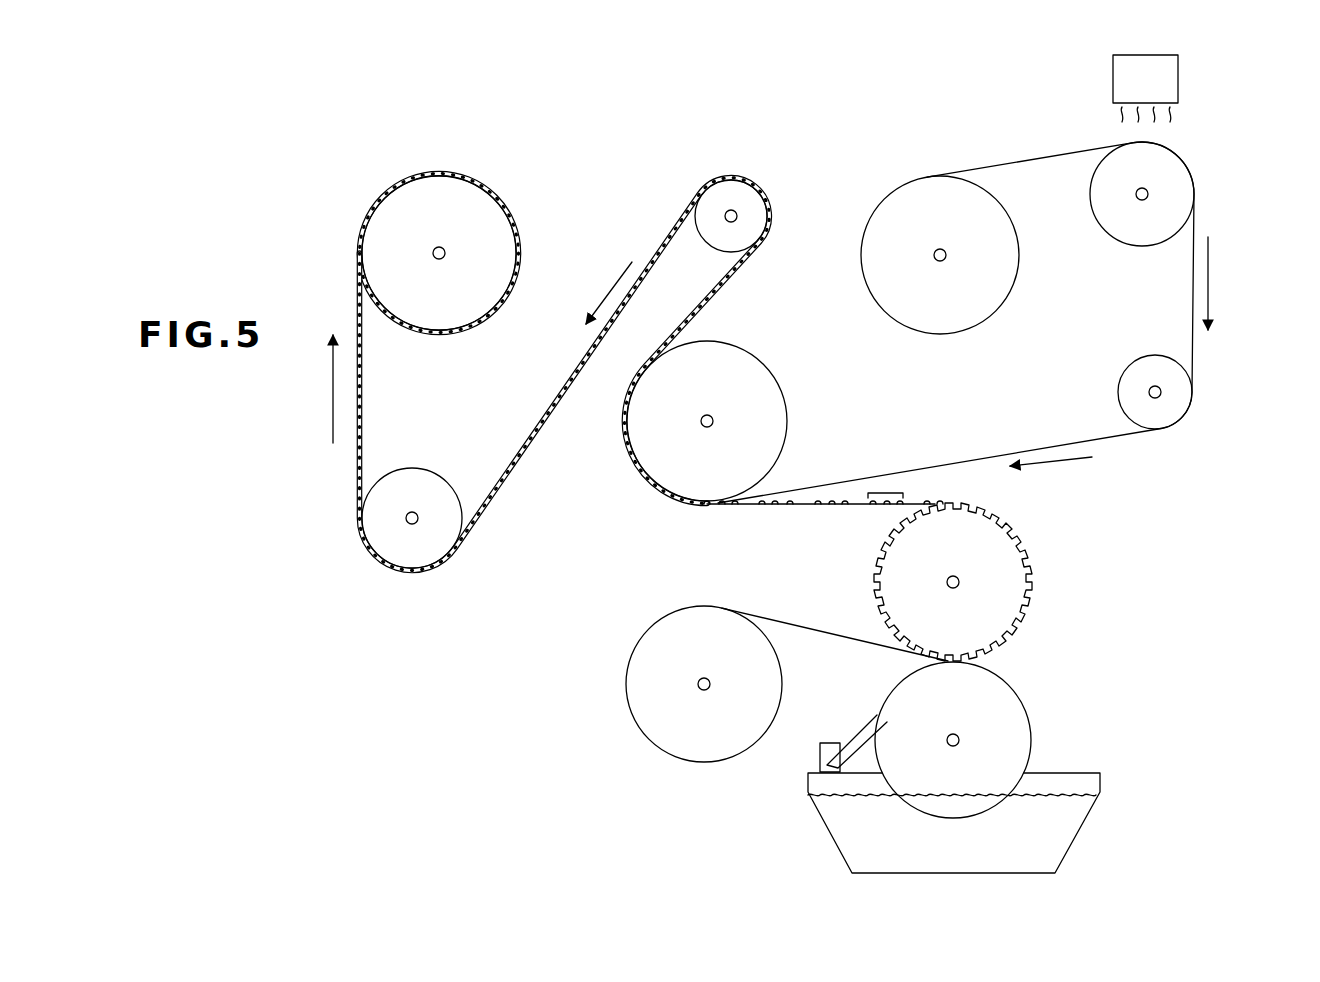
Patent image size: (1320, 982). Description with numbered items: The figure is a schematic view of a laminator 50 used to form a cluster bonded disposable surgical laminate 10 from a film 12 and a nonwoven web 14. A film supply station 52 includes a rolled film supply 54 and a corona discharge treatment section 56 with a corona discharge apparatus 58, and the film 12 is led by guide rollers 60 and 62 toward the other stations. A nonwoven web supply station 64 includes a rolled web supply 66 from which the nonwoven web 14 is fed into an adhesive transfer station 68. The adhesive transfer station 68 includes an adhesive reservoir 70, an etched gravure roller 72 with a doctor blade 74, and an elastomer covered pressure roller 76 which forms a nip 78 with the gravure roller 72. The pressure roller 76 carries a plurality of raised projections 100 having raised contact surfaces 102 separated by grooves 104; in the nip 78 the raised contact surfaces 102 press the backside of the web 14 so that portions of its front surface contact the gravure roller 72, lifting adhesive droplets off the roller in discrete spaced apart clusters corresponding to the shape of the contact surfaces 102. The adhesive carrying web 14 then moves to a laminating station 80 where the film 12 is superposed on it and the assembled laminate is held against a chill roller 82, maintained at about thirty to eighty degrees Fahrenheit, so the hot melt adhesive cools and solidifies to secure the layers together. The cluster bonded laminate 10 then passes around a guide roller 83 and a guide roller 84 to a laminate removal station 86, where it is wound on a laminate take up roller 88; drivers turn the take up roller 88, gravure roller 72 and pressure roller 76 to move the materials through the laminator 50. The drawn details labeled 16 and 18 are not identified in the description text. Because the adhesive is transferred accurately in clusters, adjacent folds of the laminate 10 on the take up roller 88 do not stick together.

The laminate 10 is at (537, 404).
The film 12 is at (1010, 153).
The nonwoven web 14 is at (858, 503).
The joining region 16 is at (885, 492).
The adhesive particles 18 is at (777, 506).
The laminator 50 is at (831, 166).
The film supply station 52 is at (982, 199).
The rolled film supply 54 is at (998, 248).
The corona discharge treatment section 56 is at (1209, 94).
The corona discharge apparatus 58 is at (1178, 88).
The guide roller 60 is at (1173, 197).
The guide roller 62 is at (1168, 413).
The nonwoven web supply station 64 is at (652, 687).
The rolled web supply 66 is at (665, 728).
The adhesive transfer station 68 is at (944, 759).
The adhesive reservoir 70 is at (1057, 832).
The etched gravure roller 72 is at (1013, 737).
The doctor blade 74 is at (832, 733).
The elastomer covered pressure roller 76 is at (966, 582).
The nip 78 is at (920, 660).
The laminating station 80 is at (692, 401).
The chill roller 82 is at (655, 430).
The guide roller 83 is at (730, 192).
The guide roller 84 is at (375, 516).
The laminate removal station 86 is at (450, 222).
The laminate take up roller 88 is at (463, 207).
The raised projections 100 is at (883, 551).
The raised contact surfaces 102 is at (900, 519).
The grooves 104 is at (878, 571).